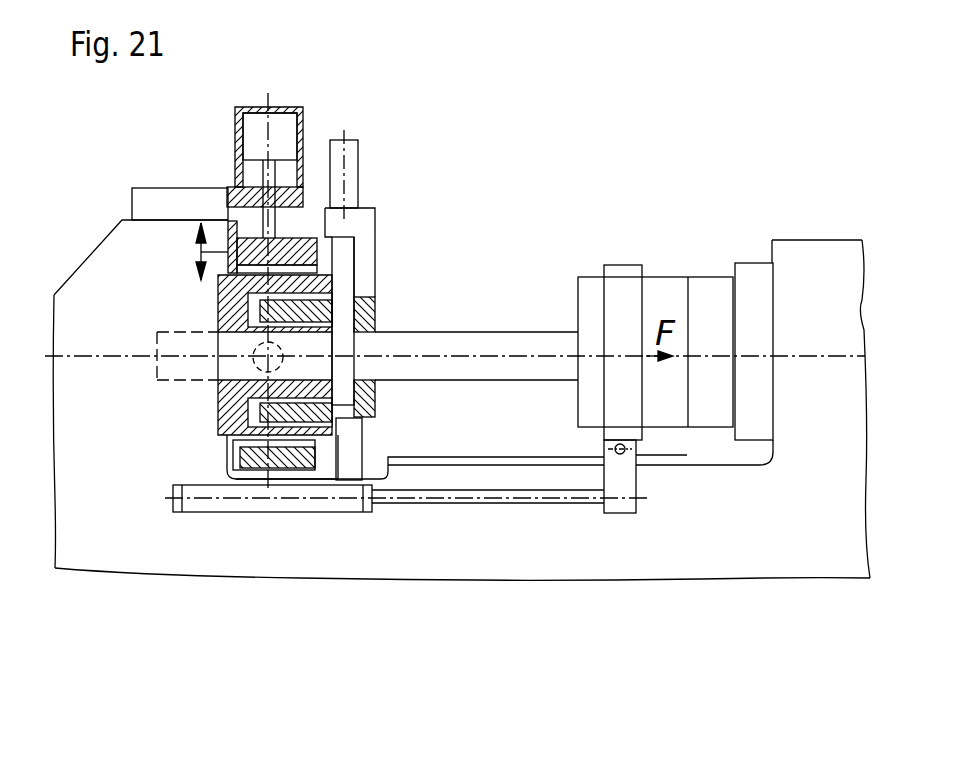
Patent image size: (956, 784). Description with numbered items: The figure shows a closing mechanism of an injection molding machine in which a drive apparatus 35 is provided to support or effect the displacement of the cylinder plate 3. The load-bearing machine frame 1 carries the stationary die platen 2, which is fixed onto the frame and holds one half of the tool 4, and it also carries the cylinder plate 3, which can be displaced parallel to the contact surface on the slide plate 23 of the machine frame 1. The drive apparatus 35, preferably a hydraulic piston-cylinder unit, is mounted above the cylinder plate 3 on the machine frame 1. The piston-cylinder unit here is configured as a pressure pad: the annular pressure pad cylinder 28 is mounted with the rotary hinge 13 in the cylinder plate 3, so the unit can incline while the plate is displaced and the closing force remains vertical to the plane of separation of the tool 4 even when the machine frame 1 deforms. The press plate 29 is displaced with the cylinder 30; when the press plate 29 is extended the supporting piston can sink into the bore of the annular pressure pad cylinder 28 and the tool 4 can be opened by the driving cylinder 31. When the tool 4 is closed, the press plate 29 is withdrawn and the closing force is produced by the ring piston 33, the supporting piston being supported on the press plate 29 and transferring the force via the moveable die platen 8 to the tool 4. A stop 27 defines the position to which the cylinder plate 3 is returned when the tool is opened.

The machine frame 1 is at (108, 508).
The stationary die platen 2 is at (753, 283).
The cylinder plate 3 is at (303, 253).
The tool 4 is at (712, 290).
The moveable die platen 8 is at (622, 287).
The hinge 13 is at (328, 422).
The slide plate 23 is at (230, 220).
The stop 27 is at (268, 490).
The annular pressure pad cylinder 28 is at (276, 370).
The press plate 29 is at (342, 322).
The cylinder 30 is at (345, 150).
The driving cylinder 31 is at (267, 497).
The ring piston 33 is at (370, 408).
The drive apparatus 35 is at (242, 108).